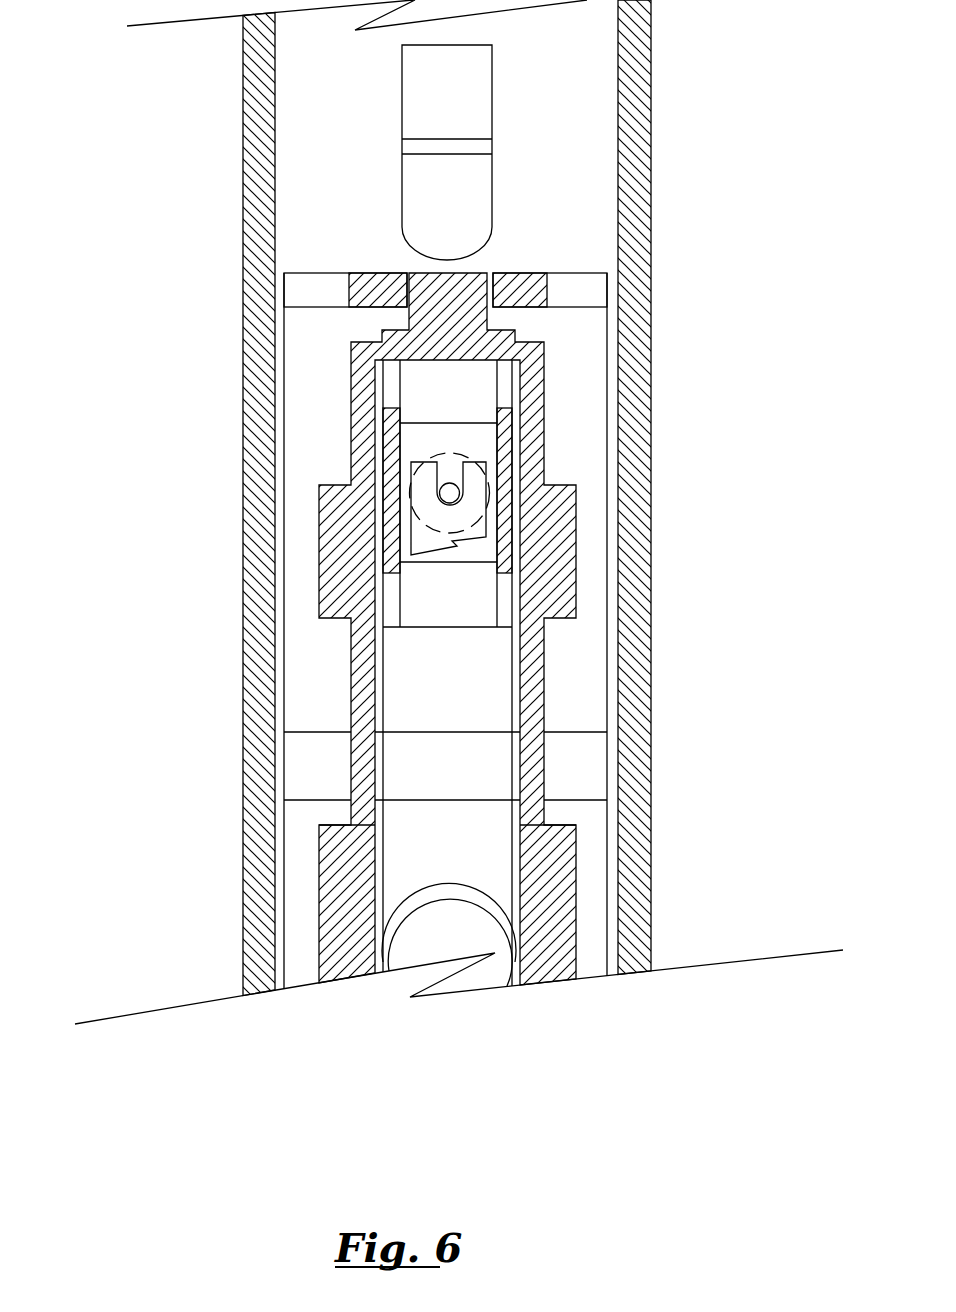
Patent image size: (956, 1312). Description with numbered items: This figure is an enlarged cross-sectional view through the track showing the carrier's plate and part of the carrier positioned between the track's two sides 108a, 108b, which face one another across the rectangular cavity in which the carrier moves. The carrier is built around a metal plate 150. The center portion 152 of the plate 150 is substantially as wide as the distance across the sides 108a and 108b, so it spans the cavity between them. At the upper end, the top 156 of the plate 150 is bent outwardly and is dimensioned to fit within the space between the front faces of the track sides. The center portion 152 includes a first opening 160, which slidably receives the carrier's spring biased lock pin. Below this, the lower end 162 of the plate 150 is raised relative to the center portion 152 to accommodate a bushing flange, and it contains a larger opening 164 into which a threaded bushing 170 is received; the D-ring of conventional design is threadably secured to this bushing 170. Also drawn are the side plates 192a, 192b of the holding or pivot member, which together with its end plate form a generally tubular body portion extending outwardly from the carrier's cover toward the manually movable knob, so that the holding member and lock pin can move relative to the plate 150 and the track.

The side 108a is at (243, 192).
The side 108b is at (636, 174).
The metal plate 150 is at (580, 385).
The center portion of the plate 152 is at (312, 677).
The top of the plate 156 is at (318, 292).
The first opening 160 is at (450, 540).
The lower end of the plate 162 is at (309, 904).
The larger opening 164 is at (490, 897).
The threaded bushing 170 is at (388, 917).
The side plate 192a is at (390, 505).
The side plate 192b is at (507, 547).